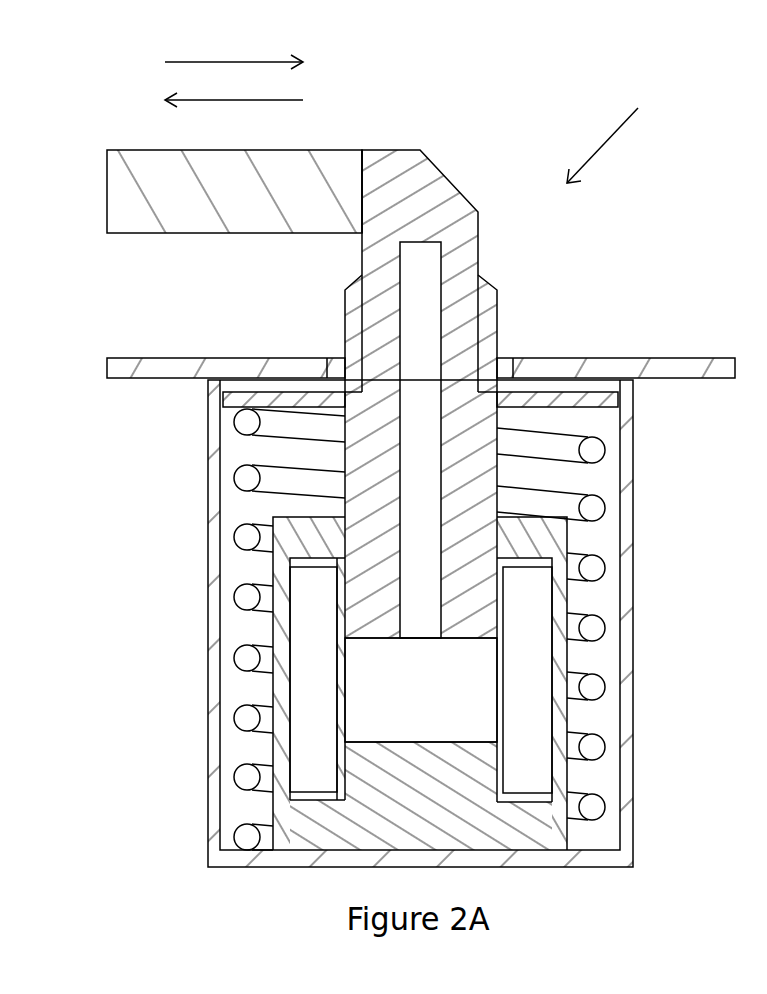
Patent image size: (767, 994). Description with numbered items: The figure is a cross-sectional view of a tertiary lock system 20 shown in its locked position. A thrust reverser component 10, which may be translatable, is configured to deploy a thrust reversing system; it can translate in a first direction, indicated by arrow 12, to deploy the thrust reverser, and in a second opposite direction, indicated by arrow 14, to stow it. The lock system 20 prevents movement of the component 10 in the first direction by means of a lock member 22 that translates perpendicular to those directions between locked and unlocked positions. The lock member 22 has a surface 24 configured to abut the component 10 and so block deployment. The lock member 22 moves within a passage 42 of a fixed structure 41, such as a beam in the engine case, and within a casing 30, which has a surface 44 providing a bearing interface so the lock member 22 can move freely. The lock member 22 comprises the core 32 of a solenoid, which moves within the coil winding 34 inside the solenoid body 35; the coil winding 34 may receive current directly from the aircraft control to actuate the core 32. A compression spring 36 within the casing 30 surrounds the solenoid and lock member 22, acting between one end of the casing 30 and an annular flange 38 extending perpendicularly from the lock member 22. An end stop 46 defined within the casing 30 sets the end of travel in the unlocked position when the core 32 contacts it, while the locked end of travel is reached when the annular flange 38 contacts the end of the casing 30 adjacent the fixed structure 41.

The thrust reverser component 10 is at (167, 210).
The arrow (first direction) 12 is at (234, 42).
The arrow (second direction) 14 is at (234, 119).
The tertiary lock system 20 is at (629, 121).
The lock member 22 is at (402, 183).
The surface 24 is at (360, 208).
The casing 30 is at (207, 552).
The solenoid core 32 is at (475, 468).
The coil winding 34 is at (533, 652).
The solenoid body 35 is at (540, 535).
The compression spring 36 is at (237, 722).
The annular flange 38 is at (578, 402).
The fixed structure 41 is at (158, 372).
The passage 42 is at (500, 370).
The bearing surface 44 is at (362, 306).
The end stop 46 is at (402, 742).